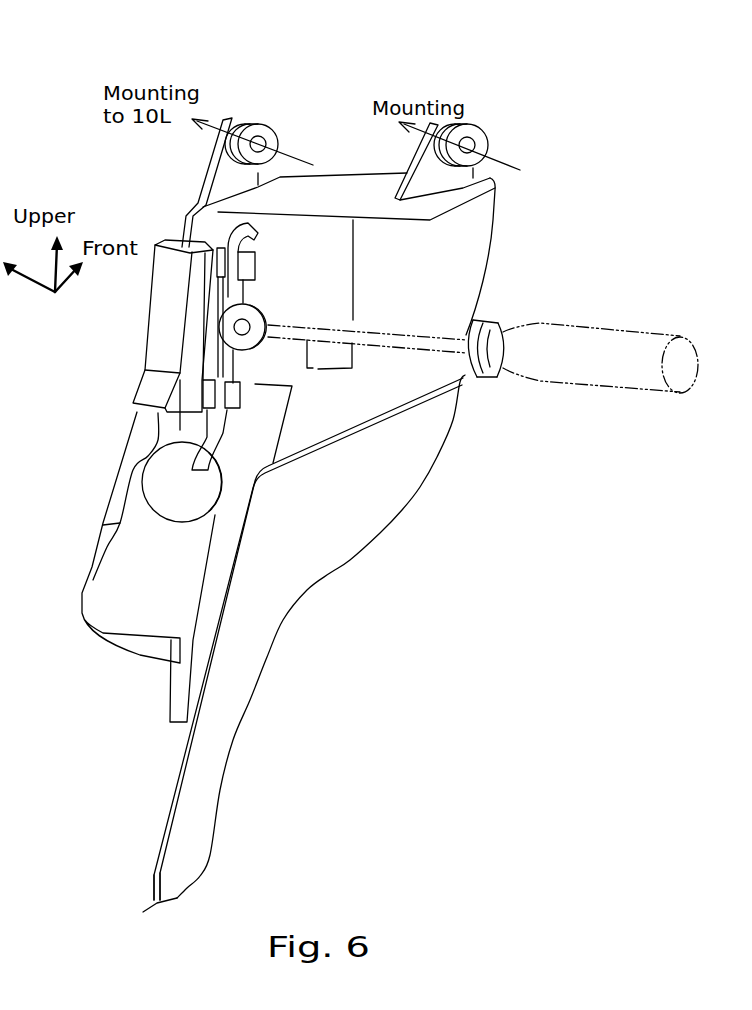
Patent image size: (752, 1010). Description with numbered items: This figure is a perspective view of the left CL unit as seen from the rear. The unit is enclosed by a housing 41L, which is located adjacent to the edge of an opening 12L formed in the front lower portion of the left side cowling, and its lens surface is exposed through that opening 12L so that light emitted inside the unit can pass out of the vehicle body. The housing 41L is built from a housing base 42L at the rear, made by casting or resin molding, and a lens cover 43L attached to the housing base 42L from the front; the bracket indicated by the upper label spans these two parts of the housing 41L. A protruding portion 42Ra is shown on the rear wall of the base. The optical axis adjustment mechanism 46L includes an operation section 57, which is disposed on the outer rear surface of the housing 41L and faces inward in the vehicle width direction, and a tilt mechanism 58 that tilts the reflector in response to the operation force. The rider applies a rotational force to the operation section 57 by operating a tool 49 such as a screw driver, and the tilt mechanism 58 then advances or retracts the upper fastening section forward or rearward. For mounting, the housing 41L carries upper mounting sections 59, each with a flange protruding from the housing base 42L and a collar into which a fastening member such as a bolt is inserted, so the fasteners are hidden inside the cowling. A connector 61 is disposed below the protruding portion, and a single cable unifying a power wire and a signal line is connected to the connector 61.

The opening 12L is at (203, 793).
The housing 41L is at (385, 53).
The housing base 42L is at (381, 170).
The cover member 42Ra is at (165, 315).
The lens cover 43L is at (327, 192).
The optical axis adjustment mechanism 46L is at (253, 357).
The tool 49 is at (606, 350).
The operation section 57 is at (267, 347).
The tilt mechanism 58 is at (258, 310).
The upper mounting sections 59 is at (260, 122).
The connector 61 is at (188, 498).